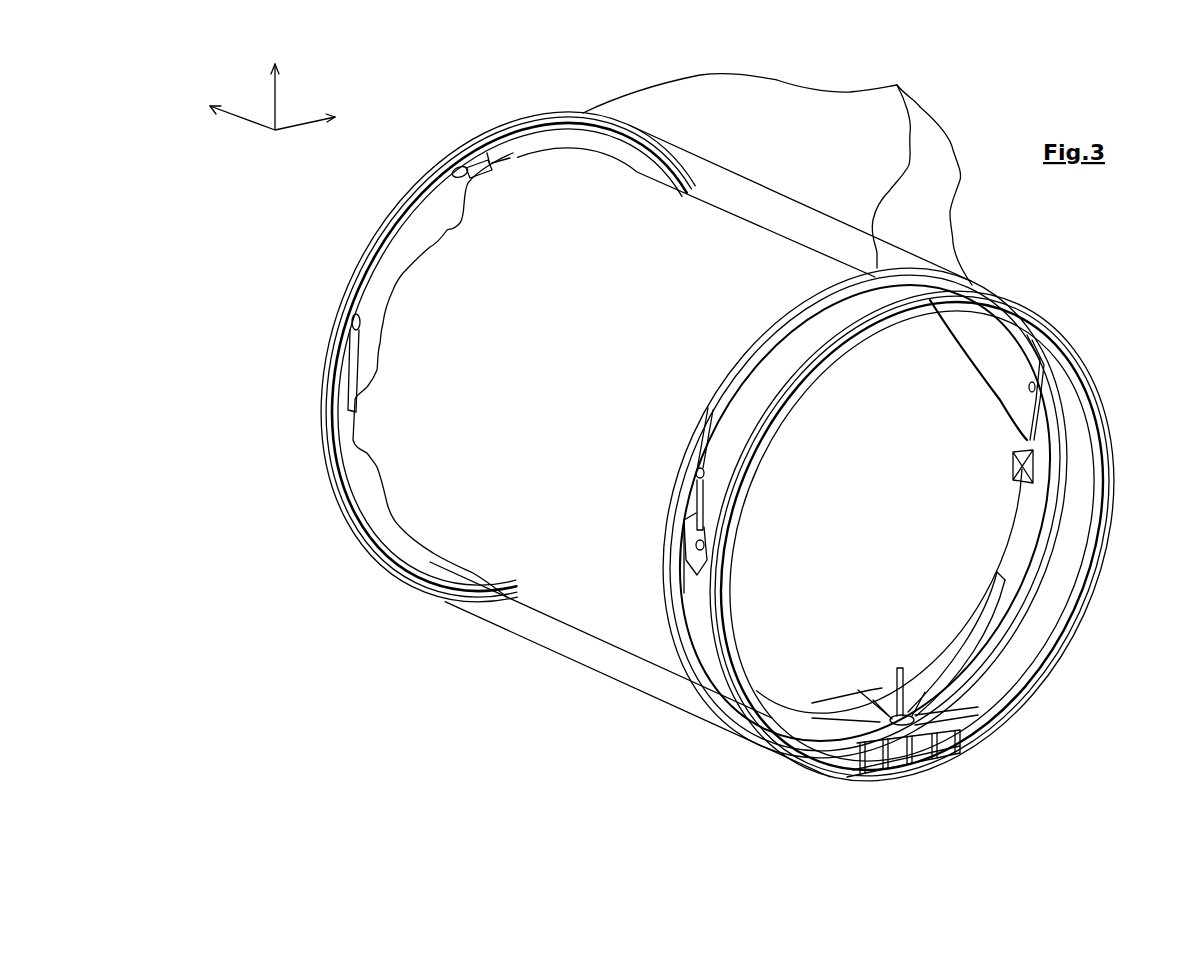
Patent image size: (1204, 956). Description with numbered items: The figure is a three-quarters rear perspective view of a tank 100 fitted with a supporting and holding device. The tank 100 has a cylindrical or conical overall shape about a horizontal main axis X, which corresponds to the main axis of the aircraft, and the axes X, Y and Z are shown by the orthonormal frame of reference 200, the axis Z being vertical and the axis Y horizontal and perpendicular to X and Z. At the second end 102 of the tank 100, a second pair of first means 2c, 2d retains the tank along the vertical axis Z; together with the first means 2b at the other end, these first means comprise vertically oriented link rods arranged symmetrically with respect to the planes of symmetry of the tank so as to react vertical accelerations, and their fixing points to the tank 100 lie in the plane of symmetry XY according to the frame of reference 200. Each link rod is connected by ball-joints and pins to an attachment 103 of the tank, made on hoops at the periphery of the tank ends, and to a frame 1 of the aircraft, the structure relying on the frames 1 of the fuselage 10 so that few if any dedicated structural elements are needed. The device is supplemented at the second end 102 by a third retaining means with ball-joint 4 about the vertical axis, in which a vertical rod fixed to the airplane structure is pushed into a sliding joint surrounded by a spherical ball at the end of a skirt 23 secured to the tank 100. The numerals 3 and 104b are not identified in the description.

The frame 1 is at (777, 170).
The fastening element 3 is at (478, 160).
The fuselage 10 is at (493, 628).
The tank 100 is at (625, 610).
The orthonormal frame of reference 200 is at (252, 180).
The first means 2b is at (353, 368).
The first means 2c is at (702, 505).
The first means 2d is at (1030, 413).
The second end 102 is at (885, 467).
The attachment 103 is at (1040, 487).
The inner wall surface 104b is at (993, 540).
The skirt 23 is at (1047, 647).
The ball-joint 4 is at (963, 751).